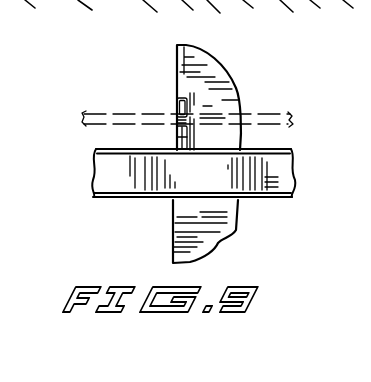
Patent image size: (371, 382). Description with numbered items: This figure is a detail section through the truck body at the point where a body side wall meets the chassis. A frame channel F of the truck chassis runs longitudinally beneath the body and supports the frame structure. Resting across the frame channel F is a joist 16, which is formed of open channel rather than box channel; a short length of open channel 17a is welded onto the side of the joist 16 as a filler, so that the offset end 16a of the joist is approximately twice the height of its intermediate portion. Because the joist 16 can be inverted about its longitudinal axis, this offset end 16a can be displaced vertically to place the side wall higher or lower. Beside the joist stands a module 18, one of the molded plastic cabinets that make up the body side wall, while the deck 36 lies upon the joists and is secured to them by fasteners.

The joist 16 is at (177, 101).
The offset end 16a is at (177, 128).
The short length of open channel 17a is at (189, 112).
The module 18 is at (215, 100).
The deck 36 is at (268, 117).
The frame channel F is at (294, 173).